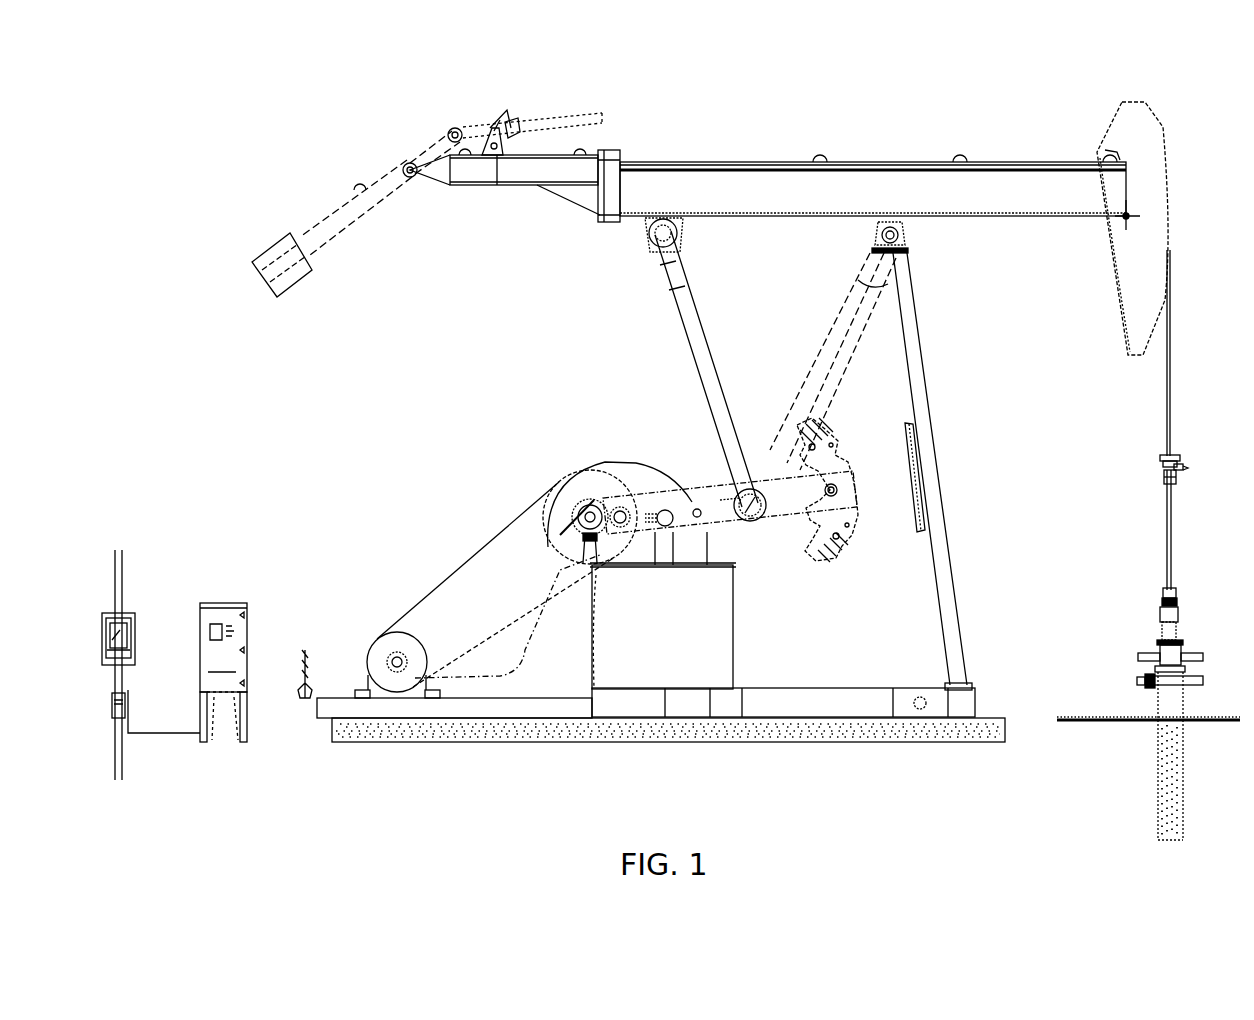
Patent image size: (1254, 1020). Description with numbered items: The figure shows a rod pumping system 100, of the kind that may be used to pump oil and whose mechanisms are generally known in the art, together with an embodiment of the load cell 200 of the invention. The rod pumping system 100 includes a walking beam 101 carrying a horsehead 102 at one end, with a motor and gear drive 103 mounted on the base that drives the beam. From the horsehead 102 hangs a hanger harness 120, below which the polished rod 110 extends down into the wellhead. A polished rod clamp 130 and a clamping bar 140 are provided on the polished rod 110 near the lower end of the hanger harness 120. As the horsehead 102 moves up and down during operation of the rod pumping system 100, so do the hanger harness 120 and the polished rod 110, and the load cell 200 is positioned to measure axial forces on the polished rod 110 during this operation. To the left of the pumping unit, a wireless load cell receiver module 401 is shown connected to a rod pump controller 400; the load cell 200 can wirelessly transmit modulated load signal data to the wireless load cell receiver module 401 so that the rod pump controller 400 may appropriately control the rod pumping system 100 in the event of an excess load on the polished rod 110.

The rod pumping system 100 is at (320, 80).
The walking beam 101 is at (797, 178).
The horsehead 102 is at (1152, 170).
The motor and gear drive 103 is at (624, 448).
The polished rod 110 is at (1171, 553).
The hanger harness 120 is at (1168, 388).
The polished rod clamp 130 is at (1168, 455).
The clamping bar 140 is at (1165, 478).
The load cell 200 is at (1180, 465).
The rod pump controller 400 is at (161, 521).
The wireless load cell receiver module 401 is at (130, 612).